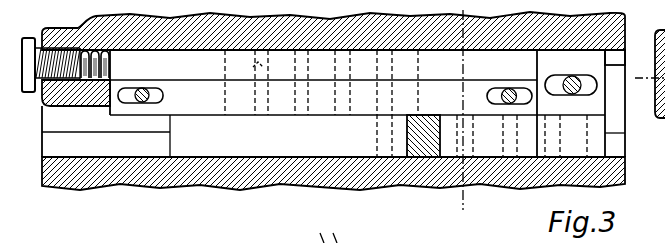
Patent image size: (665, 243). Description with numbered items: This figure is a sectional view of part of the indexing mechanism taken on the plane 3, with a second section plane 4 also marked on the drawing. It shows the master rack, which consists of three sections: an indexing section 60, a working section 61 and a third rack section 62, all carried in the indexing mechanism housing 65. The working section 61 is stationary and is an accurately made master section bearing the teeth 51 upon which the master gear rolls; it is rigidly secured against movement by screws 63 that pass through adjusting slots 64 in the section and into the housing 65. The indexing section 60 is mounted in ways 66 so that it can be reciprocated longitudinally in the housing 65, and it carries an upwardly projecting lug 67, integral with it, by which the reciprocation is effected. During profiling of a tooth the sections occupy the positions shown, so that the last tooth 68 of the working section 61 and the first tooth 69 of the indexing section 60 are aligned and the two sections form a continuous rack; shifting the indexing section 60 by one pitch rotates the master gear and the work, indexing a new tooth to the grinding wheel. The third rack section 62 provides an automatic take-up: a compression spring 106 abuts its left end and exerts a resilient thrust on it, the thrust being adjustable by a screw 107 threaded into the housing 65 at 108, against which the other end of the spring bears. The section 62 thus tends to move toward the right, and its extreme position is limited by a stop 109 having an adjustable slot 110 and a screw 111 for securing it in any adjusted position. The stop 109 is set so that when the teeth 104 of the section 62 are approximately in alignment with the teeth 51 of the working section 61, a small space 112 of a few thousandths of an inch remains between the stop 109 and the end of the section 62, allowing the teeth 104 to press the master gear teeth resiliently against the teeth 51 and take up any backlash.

The plane 3 is at (643, 78).
The plane 4 is at (463, 205).
The teeth 51 is at (300, 103).
The indexing section 60 is at (262, 147).
The working section 61 is at (218, 107).
The third rack section 62 is at (199, 67).
The screws 63 is at (140, 100).
The adjusting slots 64 is at (130, 100).
The indexing mechanism housing 65 is at (70, 180).
The ways 66 is at (660, 95).
The lug 67 is at (427, 157).
The last tooth 68 is at (392, 100).
The first tooth 69 is at (385, 150).
The teeth 104 is at (293, 30).
The compression spring 106 is at (78, 103).
The screw 107 is at (43, 108).
The threaded portion 108 is at (50, 38).
The stop 109 is at (622, 32).
The adjustable slot 110 is at (588, 78).
The screw 111 is at (574, 78).
The space 112 is at (537, 62).